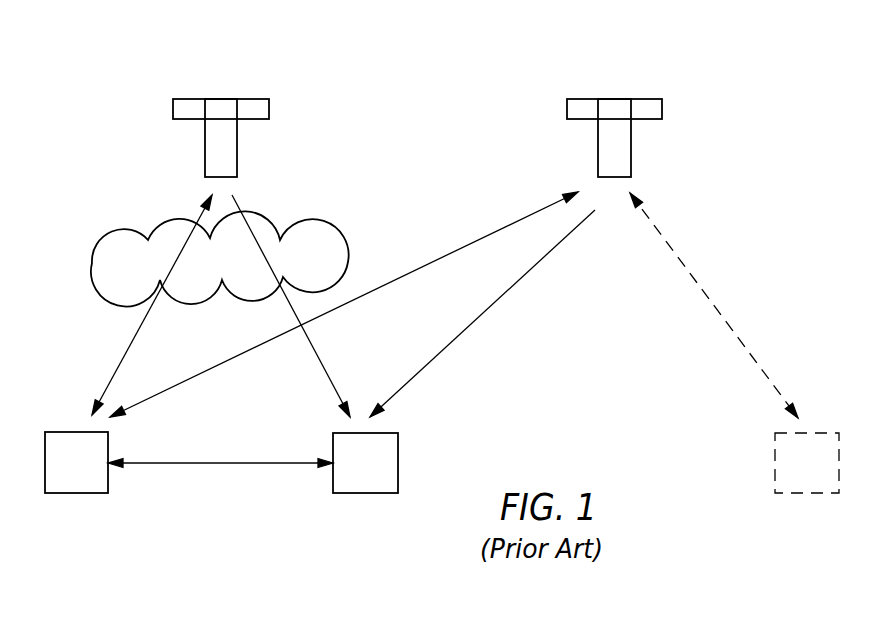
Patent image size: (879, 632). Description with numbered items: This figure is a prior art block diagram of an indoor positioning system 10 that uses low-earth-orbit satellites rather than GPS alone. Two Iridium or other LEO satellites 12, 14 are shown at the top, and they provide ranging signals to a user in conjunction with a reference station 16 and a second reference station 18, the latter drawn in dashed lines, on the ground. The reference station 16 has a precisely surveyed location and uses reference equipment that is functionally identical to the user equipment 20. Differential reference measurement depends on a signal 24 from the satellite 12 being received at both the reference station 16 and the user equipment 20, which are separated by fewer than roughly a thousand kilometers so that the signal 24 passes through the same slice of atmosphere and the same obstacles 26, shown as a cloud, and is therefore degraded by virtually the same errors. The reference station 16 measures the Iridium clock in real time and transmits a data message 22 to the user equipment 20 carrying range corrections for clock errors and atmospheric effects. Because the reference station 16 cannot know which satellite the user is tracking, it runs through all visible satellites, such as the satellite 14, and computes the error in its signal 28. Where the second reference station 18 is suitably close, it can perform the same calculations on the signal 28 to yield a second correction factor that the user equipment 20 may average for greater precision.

The wireless communication system 10 is at (340, 80).
The LEO satellite 12 is at (186, 102).
The LEO satellite 14 is at (580, 102).
The reference station 16 is at (70, 432).
The second reference station 18 is at (807, 493).
The user equipment 20 is at (362, 493).
The data message 22 is at (237, 463).
The signal 24 is at (142, 320).
The obstacles 26 is at (165, 222).
The signal 28 is at (462, 247).